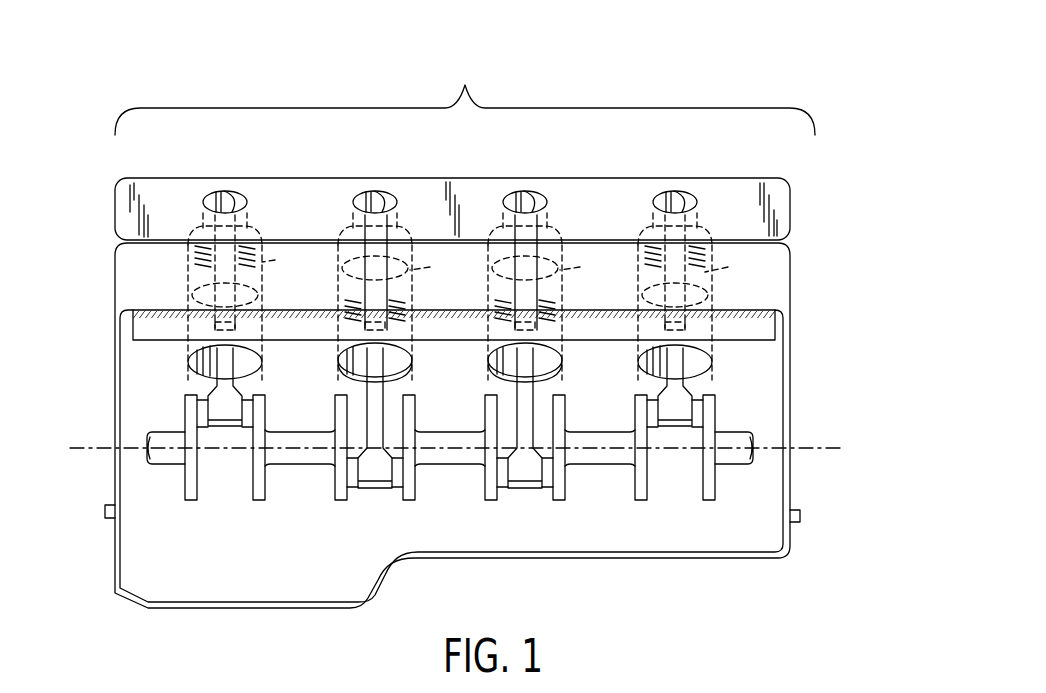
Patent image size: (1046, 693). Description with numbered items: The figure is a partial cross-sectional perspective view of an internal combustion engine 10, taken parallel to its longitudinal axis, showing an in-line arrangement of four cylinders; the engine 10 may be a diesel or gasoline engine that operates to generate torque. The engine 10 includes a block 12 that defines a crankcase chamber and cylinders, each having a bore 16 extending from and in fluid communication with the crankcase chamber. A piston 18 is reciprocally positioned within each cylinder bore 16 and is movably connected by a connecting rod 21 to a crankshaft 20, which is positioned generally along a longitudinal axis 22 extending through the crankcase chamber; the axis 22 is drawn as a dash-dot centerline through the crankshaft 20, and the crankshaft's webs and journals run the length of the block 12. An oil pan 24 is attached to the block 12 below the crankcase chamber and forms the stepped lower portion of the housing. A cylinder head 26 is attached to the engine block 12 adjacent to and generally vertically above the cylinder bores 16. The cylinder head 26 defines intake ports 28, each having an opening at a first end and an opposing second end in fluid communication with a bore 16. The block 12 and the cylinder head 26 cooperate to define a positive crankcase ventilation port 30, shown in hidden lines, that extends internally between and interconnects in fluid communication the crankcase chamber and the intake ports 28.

The internal combustion engine 10 is at (465, 83).
The block 12 is at (790, 405).
The bore 16 is at (258, 372).
The piston 18 is at (703, 272).
The crankshaft 20 is at (755, 452).
The connecting rod 21 is at (213, 393).
The longitudinal axis 22 is at (88, 440).
The oil pan 24 is at (732, 560).
The cylinder head 26 is at (790, 208).
The intake port 28 is at (243, 197).
The positive crankcase ventilation port 30 is at (472, 272).